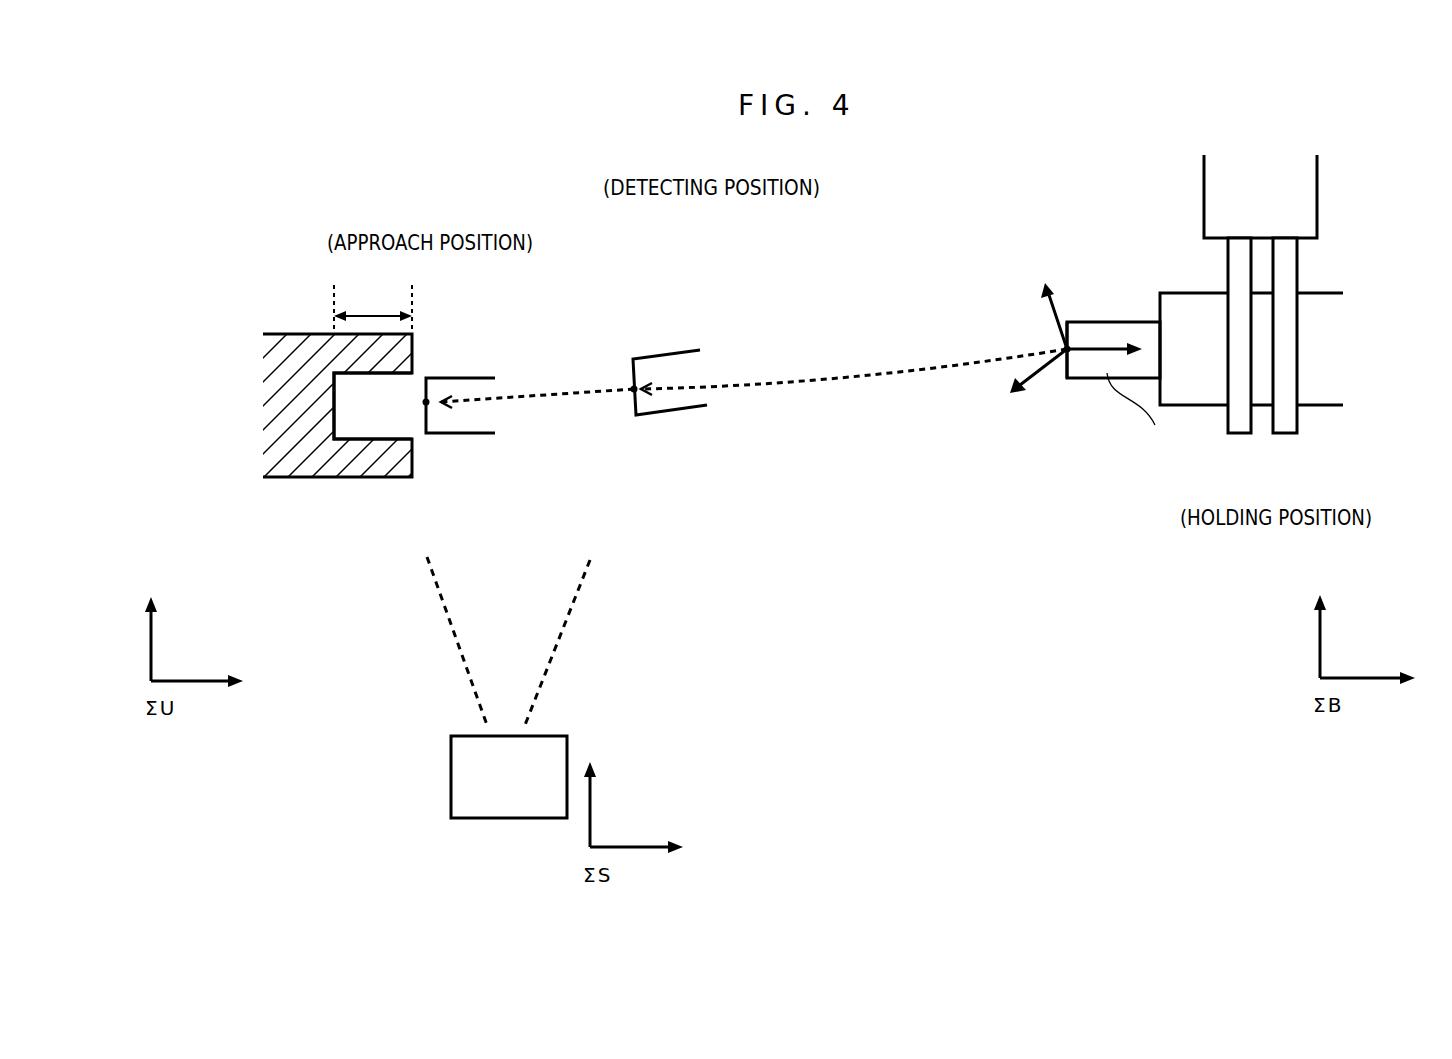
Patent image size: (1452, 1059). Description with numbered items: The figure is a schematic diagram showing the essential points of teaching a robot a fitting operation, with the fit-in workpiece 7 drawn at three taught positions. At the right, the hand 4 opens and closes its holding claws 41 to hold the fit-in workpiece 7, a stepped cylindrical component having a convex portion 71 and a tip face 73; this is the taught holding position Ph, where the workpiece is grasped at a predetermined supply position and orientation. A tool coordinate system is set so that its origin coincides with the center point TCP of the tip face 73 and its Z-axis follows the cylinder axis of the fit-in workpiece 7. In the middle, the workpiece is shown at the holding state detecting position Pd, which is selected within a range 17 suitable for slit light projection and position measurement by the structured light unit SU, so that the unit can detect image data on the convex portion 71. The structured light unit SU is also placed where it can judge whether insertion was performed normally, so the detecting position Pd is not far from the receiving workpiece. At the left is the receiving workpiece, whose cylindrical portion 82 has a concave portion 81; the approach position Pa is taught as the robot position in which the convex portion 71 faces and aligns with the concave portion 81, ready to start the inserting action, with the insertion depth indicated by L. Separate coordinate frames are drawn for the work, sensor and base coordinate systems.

The hand 4 is at (1297, 183).
The holding claws 41 is at (1283, 333).
The fit-in workpiece 7 is at (1317, 382).
The convex portion 71 is at (453, 393).
The tip face 73 is at (1067, 368).
The concave portion 81 is at (368, 422).
The cylindrical portion 82 is at (280, 350).
The range 17 is at (513, 680).
The structured light unit SU is at (510, 800).
The approach position Pa is at (427, 406).
The holding state detecting position Pd is at (640, 393).
The holding position Ph is at (1066, 348).
The center point of tip face TCP is at (1075, 357).
The insertion depth L is at (373, 308).